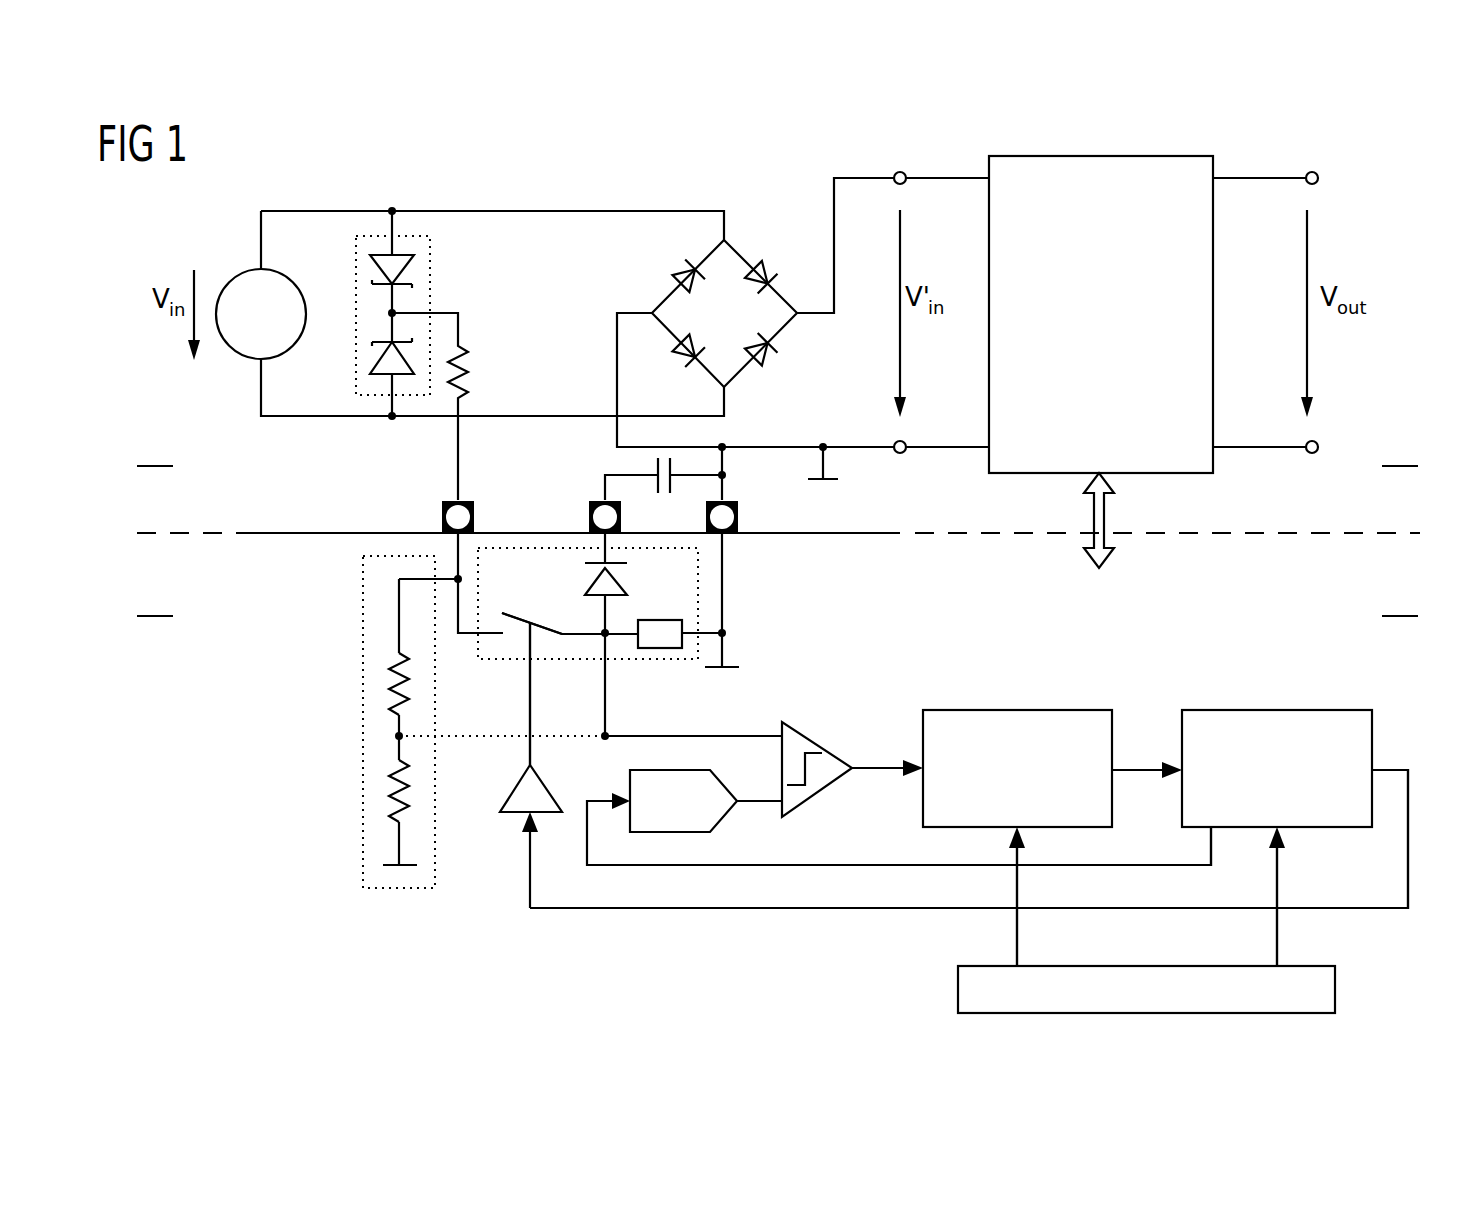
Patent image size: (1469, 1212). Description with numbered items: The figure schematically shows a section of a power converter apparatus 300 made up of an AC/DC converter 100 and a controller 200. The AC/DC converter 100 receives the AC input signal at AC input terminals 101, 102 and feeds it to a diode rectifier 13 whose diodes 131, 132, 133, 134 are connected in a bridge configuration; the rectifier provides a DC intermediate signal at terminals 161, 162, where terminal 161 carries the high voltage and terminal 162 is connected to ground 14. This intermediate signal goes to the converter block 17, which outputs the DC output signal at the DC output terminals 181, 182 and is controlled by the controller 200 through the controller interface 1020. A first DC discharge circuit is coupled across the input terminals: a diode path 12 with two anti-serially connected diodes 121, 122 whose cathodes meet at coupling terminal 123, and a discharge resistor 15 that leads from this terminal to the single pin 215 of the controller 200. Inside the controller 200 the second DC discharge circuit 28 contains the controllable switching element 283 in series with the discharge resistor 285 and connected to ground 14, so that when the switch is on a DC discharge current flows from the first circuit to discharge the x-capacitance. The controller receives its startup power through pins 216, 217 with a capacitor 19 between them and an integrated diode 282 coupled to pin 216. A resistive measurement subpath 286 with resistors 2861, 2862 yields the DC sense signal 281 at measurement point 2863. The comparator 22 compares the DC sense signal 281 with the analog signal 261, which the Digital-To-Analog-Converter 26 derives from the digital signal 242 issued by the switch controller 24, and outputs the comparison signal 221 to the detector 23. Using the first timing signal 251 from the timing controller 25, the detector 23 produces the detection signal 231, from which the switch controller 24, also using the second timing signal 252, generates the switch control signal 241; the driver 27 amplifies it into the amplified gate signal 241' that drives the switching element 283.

The power converter apparatus 300 is at (1375, 203).
The AC/DC converter 100 is at (777, 452).
The controller 200 is at (777, 602).
The diode path 12 is at (370, 236).
The diode 121 is at (428, 268).
The diode 122 is at (350, 369).
The coupling terminal 123 is at (392, 313).
The first AC input terminal 101 is at (392, 209).
The second AC input terminal 102 is at (392, 420).
The discharge resistor 15 is at (482, 357).
The diode rectifier 13 is at (710, 274).
The diode 131 is at (674, 240).
The diode 132 is at (780, 235).
The diode 133 is at (802, 372).
The diode 134 is at (658, 367).
The terminal 161 is at (900, 171).
The terminal 162 is at (900, 454).
The converter block 17 is at (1089, 328).
The DC output terminal 181 is at (1311, 171).
The DC output terminal 182 is at (1311, 454).
The controller interface 1020 is at (1108, 507).
The capacitor 19 is at (640, 465).
The ground/mass 14 is at (833, 483).
The pin 215 is at (477, 517).
The pin 216 is at (624, 517).
The pin 217 is at (741, 517).
The second DC discharge circuit 28 is at (699, 590).
The diode 282 is at (585, 577).
The discharge resistor 285 is at (660, 619).
The controllable switching element 283 is at (522, 628).
The DC sense signal 281 is at (680, 735).
The comparator 22 is at (812, 740).
The comparison signal 221 is at (875, 771).
The detector 23 is at (965, 709).
The detection signal 231 is at (1140, 768).
The switch controller 24 is at (1296, 709).
The digital signal 242 is at (1143, 864).
The switch control signal 241 is at (997, 839).
The amplified gate signal 241' is at (494, 693).
The timing controller 25 is at (1336, 990).
The first timing signal 251 is at (1020, 885).
The second timing signal 252 is at (1280, 871).
The Digital-To-Analog-Converter 26 is at (658, 850).
The analog signal 261 is at (760, 803).
The driver 27 is at (512, 817).
The resistive measurement subpath 286 is at (398, 889).
The resistor 2861 is at (395, 680).
The resistor 2862 is at (393, 806).
The measurement point 2863 is at (398, 736).